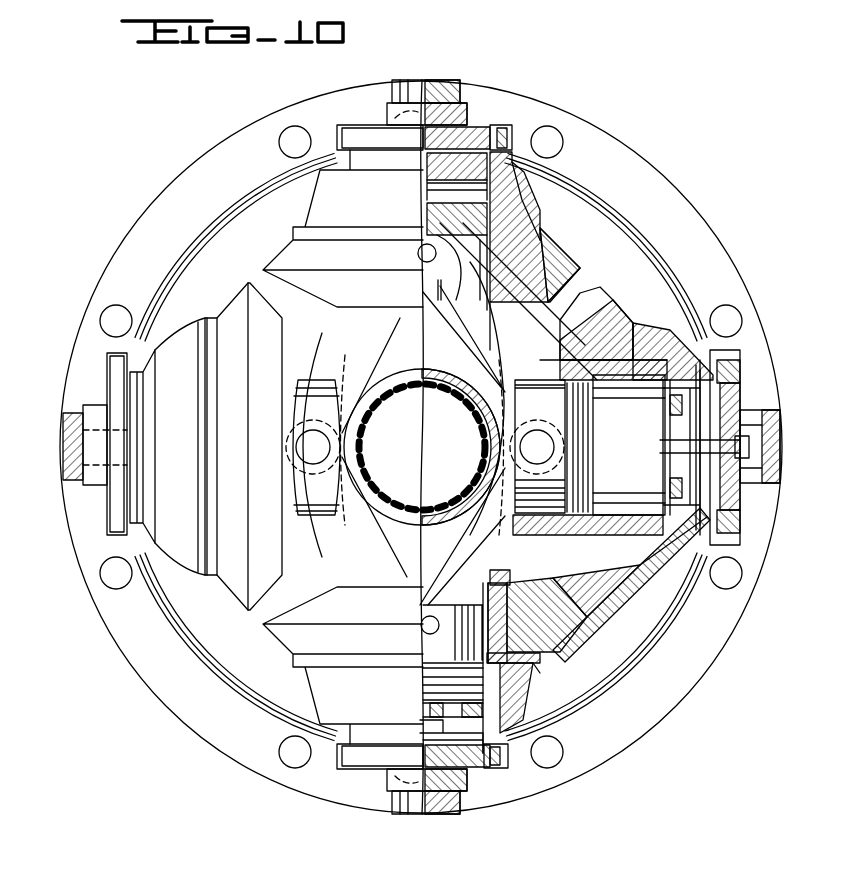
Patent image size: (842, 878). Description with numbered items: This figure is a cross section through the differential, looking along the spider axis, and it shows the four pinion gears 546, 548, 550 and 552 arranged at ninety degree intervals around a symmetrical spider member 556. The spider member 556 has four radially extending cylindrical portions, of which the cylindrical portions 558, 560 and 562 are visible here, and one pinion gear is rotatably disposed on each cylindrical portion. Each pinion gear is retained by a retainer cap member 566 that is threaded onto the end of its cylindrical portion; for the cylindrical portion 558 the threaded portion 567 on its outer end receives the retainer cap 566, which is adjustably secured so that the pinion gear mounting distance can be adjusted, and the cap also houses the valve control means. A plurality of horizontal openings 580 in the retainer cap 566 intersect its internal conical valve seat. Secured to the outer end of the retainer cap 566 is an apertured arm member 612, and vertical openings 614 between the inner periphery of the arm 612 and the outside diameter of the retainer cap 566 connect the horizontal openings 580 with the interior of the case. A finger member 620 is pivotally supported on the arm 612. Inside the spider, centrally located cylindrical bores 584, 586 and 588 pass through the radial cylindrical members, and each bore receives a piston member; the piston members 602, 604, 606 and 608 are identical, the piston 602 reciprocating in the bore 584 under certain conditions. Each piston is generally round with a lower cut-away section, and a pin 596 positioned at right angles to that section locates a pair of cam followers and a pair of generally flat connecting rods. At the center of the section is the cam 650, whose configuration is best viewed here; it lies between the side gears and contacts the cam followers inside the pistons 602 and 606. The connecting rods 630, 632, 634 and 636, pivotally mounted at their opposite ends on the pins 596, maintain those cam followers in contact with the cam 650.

The pinion gear 546 is at (553, 273).
The pinion gear 548 is at (587, 313).
The pinion gear 550 is at (537, 640).
The pinion gear 552 is at (233, 308).
The spider member 556 is at (523, 333).
The radially extending cylindrical portion 558 is at (500, 260).
The radially extending cylindrical portion 560 is at (667, 340).
The radially extending cylindrical portion 562 is at (497, 678).
The retainer cap member 566 is at (528, 200).
The threaded portion 567 is at (560, 200).
The horizontal openings 580 is at (470, 148).
The cylindrical bore 584 is at (489, 282).
The cylindrical bore 586 is at (647, 500).
The cylindrical bore 588 is at (503, 590).
The pin 596 is at (425, 253).
The piston member 602 is at (459, 231).
The piston member 604 is at (597, 443).
The piston member 606 is at (420, 627).
The piston member 608 is at (313, 508).
The apertured arm member 612 is at (515, 135).
The vertical openings 614 is at (745, 520).
The finger member 620 is at (395, 112).
The connecting rod 630 is at (472, 347).
The connecting rod 632 is at (492, 548).
The connecting rod 634 is at (378, 545).
The connecting rod 636 is at (378, 366).
The cam 650 is at (420, 303).